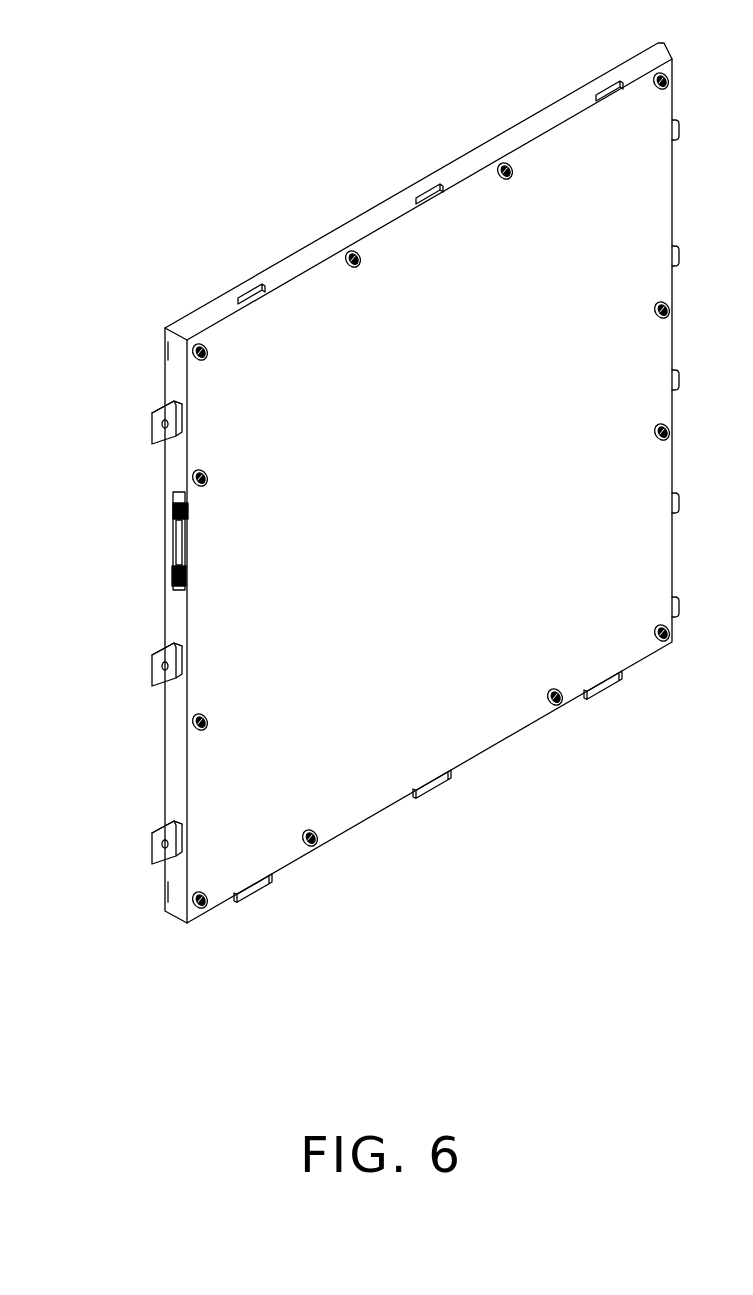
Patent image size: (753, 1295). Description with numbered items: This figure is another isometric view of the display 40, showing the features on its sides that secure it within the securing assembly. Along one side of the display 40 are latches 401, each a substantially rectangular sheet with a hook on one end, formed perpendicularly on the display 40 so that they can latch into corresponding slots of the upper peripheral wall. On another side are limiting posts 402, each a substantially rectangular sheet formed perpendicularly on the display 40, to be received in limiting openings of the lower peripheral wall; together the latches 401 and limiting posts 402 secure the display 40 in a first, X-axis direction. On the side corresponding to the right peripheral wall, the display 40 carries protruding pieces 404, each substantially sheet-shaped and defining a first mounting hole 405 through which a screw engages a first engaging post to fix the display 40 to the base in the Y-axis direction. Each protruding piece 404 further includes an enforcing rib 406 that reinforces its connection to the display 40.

The display 40 is at (258, 47).
The latch 401 is at (430, 190).
The limiting post 402 is at (440, 785).
The protruding piece 404 is at (142, 451).
The first mounting hole 405 is at (160, 423).
The enforcing rib 406 is at (170, 402).